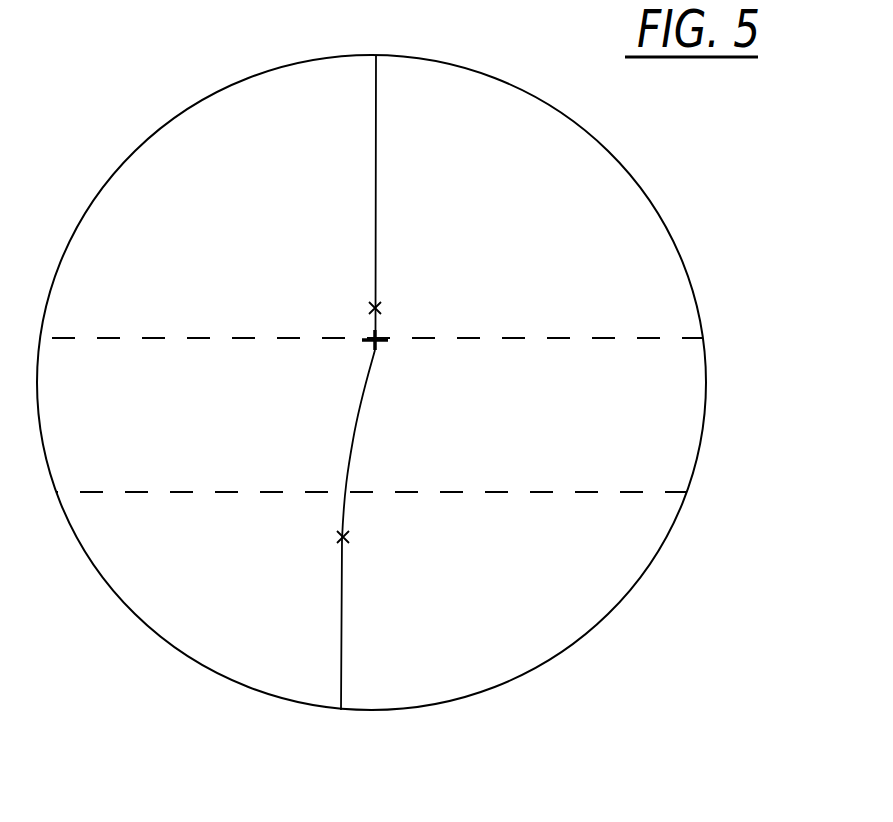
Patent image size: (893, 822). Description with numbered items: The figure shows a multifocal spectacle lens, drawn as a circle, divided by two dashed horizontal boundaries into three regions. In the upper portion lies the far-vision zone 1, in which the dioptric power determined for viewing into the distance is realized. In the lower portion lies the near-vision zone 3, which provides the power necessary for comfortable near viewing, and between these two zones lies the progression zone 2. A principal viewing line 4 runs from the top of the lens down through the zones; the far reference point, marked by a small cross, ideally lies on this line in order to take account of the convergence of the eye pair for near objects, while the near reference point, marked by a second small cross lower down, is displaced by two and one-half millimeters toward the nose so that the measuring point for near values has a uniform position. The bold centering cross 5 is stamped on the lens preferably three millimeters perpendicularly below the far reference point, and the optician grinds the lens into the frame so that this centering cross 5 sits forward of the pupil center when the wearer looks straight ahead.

The far-vision zone 1 is at (371, 278).
The progression zone 2 is at (371, 445).
The near-vision zone 3 is at (296, 548).
The principal viewing line 4 is at (377, 190).
The centering cross 5 is at (378, 346).